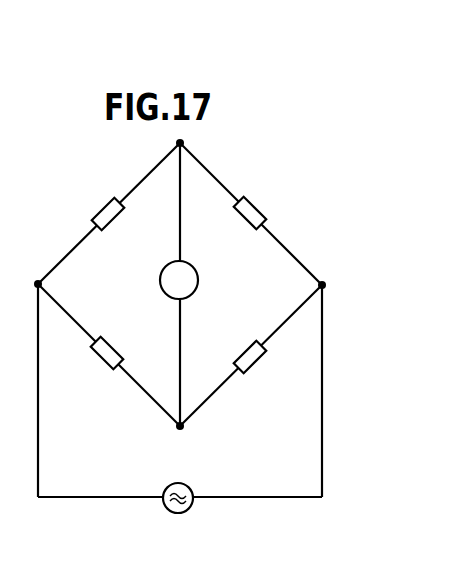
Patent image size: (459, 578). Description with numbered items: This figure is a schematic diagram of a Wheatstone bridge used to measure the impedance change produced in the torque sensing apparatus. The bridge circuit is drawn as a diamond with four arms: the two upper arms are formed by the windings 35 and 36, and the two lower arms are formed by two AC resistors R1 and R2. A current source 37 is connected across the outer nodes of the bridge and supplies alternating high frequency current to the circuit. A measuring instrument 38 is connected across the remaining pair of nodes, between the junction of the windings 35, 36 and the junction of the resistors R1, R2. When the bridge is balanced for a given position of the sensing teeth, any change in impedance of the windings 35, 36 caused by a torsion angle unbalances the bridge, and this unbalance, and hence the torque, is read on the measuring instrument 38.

The winding 35 is at (103, 221).
The winding 36 is at (249, 214).
The current source 37 is at (189, 488).
The measuring instrument 38 is at (197, 288).
The AC resistor R1 is at (103, 350).
The AC resistor R2 is at (255, 352).